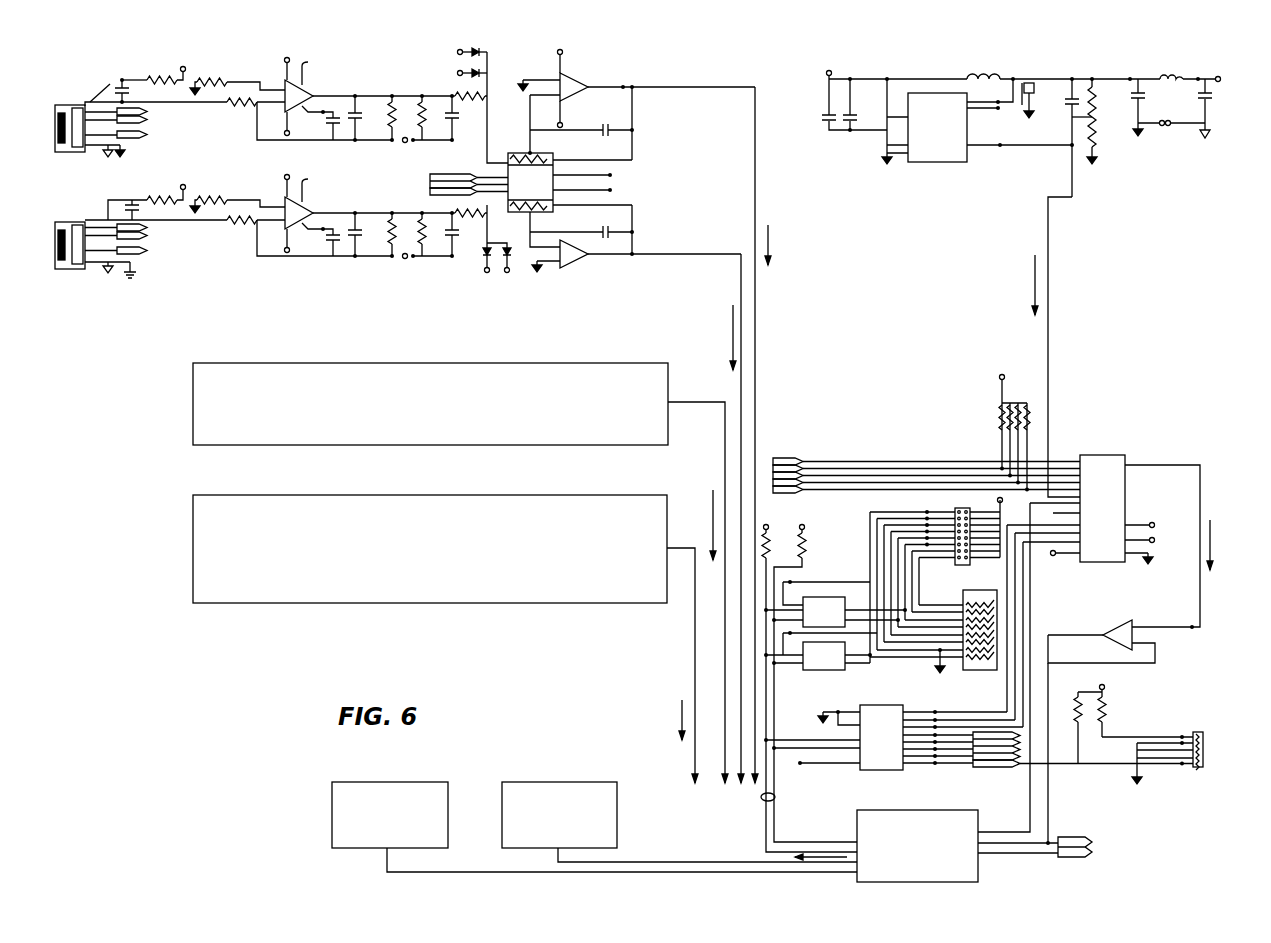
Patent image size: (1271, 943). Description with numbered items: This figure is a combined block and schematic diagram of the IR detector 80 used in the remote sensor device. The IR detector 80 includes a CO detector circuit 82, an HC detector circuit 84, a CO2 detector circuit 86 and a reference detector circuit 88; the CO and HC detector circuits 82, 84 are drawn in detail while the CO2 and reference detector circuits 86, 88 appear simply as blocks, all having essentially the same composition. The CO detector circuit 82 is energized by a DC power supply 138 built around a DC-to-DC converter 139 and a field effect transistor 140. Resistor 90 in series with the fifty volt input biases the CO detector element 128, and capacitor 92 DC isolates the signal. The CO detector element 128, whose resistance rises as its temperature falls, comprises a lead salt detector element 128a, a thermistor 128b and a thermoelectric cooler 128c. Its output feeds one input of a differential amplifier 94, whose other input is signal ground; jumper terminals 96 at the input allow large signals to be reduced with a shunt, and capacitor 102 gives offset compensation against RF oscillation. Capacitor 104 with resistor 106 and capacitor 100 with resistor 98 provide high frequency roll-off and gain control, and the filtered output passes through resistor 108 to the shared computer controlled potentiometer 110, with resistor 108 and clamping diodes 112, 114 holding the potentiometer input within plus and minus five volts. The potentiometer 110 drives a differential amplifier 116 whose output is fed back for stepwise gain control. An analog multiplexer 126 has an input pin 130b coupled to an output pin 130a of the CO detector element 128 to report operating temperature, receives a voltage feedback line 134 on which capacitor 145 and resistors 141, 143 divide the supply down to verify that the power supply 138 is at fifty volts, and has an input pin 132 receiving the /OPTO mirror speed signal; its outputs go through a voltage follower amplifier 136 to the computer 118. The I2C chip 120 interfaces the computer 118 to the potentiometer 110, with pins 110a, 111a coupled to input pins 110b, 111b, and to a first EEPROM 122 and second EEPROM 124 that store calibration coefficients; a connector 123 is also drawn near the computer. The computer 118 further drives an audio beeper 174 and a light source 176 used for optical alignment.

The IR detector 80 is at (313, 633).
The CO detector circuit 82 is at (367, 72).
The HC detector circuit 84 is at (357, 264).
The CO2 detector circuit 86 is at (468, 410).
The reference detector circuit 88 is at (507, 556).
The resistor 90 is at (154, 71).
The capacitor 92 is at (132, 93).
The differential amplifier 94 is at (312, 92).
The jumper terminals 96 is at (405, 143).
The resistor 98 is at (413, 118).
The capacitor 100 is at (453, 118).
The capacitor 102 is at (338, 128).
The capacitor 104 is at (357, 120).
The resistor 106 is at (390, 108).
The resistor 108 is at (461, 96).
The computer controlled potentiometer 110 is at (516, 153).
The pin 110a is at (1020, 757).
The input pin 110b is at (430, 177).
The pin 111a is at (997, 767).
The input pin 111b is at (430, 191).
The clamping diode 112 is at (458, 71).
The clamping diode 114 is at (483, 52).
The differential amplifier 116 is at (577, 80).
The computer 118 is at (930, 870).
The I2C chip 120 is at (895, 756).
The first EEPROM 122 is at (818, 597).
The connector 123 is at (775, 797).
The second EEPROM 124 is at (808, 668).
The analog multiplexer 126 is at (1110, 540).
The CO detector element 128 is at (89, 126).
The lead salt detector element 128a is at (57, 150).
The thermistor 128b is at (78, 150).
The thermoelectric cooler 128c is at (77, 103).
The output pin 130a is at (152, 112).
The input pin 130b is at (788, 458).
The input pin 132 is at (1053, 516).
The voltage feedback line 134 is at (1050, 312).
The voltage follower amplifier 136 is at (1118, 624).
The DC power supply 138 is at (982, 175).
The DC-to-DC converter 139 is at (948, 155).
The field effect transistor 140 is at (1027, 82).
The resistor 141 is at (1097, 100).
The resistor 143 is at (1098, 140).
The capacitor 145 is at (1068, 99).
The audio beeper 174 is at (426, 812).
The light source 176 is at (596, 812).